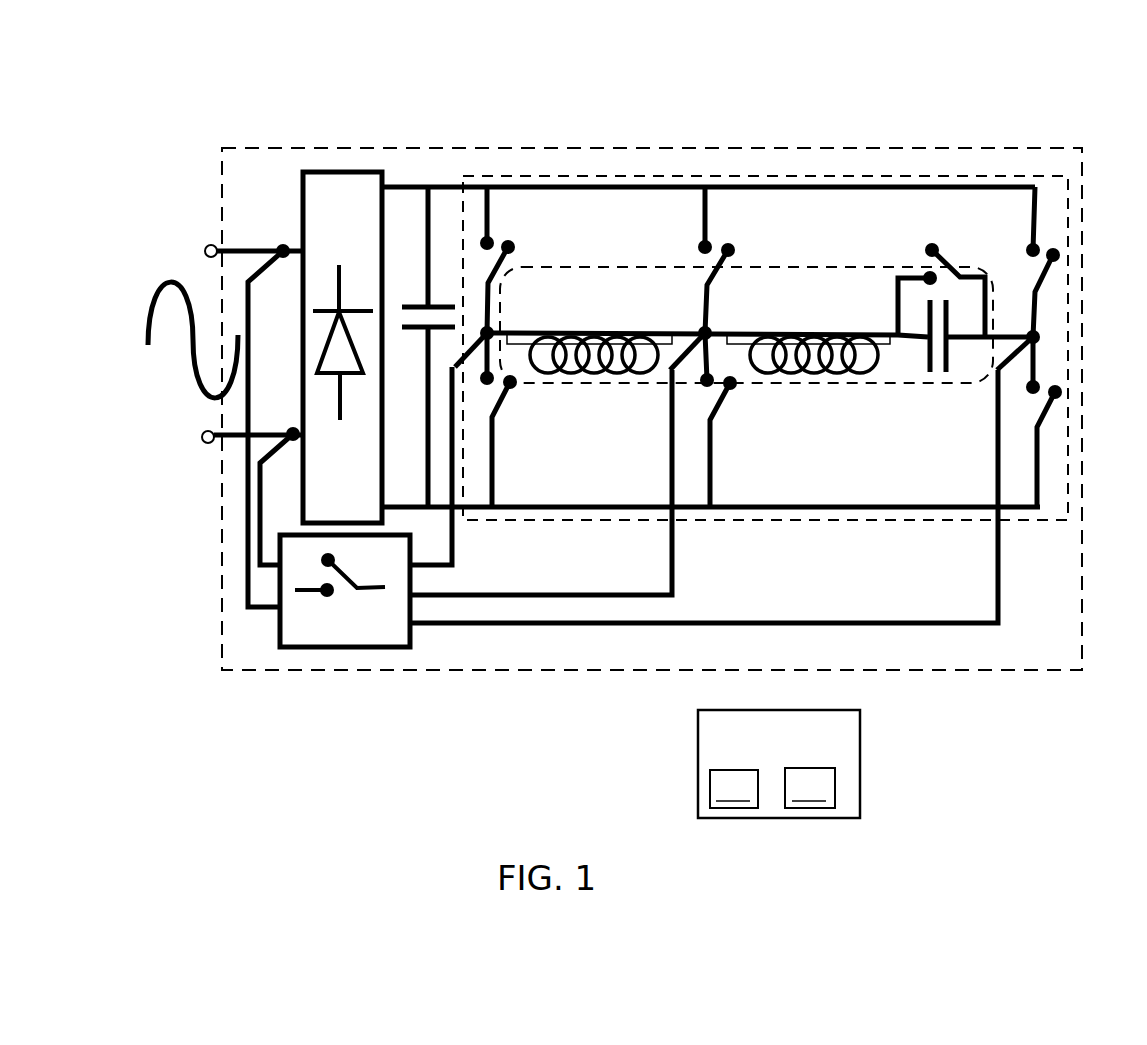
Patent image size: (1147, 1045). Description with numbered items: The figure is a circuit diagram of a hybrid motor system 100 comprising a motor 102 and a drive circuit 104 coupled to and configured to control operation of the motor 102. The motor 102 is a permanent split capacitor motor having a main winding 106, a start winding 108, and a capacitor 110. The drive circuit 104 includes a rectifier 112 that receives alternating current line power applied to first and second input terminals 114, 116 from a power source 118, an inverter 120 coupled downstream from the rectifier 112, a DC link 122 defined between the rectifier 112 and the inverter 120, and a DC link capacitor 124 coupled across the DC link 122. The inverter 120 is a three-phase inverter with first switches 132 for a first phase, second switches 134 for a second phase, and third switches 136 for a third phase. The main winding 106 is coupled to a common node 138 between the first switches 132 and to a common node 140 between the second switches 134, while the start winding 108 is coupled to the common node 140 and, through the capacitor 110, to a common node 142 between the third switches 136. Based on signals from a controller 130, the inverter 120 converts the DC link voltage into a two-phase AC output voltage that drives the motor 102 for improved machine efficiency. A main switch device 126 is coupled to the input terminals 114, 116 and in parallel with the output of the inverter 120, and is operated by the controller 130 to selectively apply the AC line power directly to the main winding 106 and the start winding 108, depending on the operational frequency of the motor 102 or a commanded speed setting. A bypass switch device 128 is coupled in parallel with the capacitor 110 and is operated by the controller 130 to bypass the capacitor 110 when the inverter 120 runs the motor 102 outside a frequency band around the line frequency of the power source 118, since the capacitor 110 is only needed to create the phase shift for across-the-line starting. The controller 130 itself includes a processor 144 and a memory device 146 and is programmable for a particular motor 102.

The hybrid motor system 100 is at (231, 78).
The motor 102 is at (548, 268).
The drive circuit 104 is at (960, 152).
The main winding 106 is at (605, 388).
The start winding 108 is at (821, 397).
The capacitor 110 is at (943, 392).
The rectifier 112 is at (330, 172).
The first input terminal 114 is at (212, 245).
The second input terminal 116 is at (205, 443).
The power source 118 is at (126, 336).
The inverter 120 is at (845, 522).
The DC link 122 is at (414, 186).
The DC link capacitor 124 is at (414, 304).
The main switch device 126 is at (343, 648).
The bypass switch device 128 is at (945, 252).
The controller 130 is at (804, 764).
The first switches 132 is at (508, 242).
The second switches 134 is at (730, 250).
The third switches 136 is at (1058, 252).
The common node 138 is at (493, 332).
The common node 140 is at (708, 332).
The common node 142 is at (1037, 336).
The processor 144 is at (734, 789).
The memory device 146 is at (810, 788).